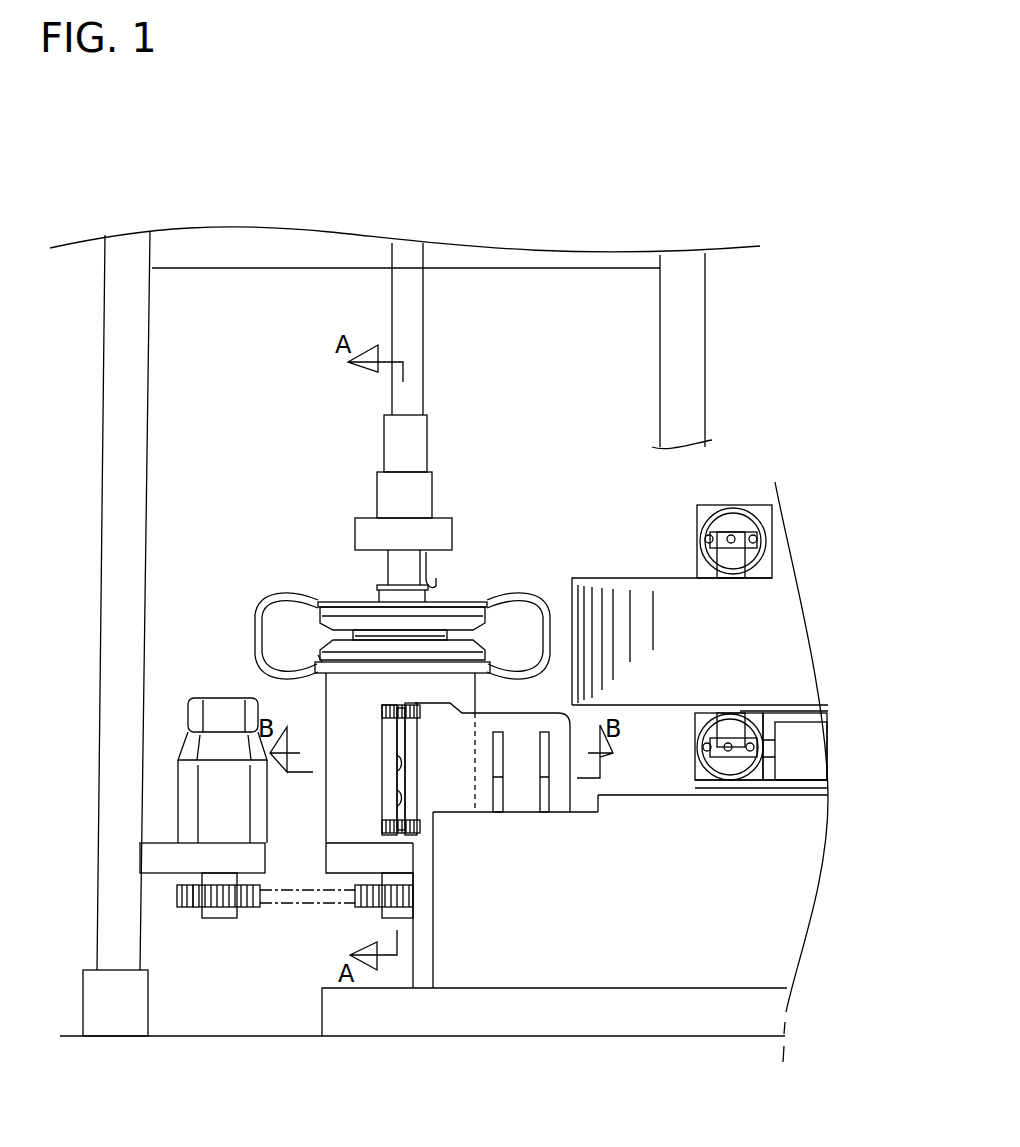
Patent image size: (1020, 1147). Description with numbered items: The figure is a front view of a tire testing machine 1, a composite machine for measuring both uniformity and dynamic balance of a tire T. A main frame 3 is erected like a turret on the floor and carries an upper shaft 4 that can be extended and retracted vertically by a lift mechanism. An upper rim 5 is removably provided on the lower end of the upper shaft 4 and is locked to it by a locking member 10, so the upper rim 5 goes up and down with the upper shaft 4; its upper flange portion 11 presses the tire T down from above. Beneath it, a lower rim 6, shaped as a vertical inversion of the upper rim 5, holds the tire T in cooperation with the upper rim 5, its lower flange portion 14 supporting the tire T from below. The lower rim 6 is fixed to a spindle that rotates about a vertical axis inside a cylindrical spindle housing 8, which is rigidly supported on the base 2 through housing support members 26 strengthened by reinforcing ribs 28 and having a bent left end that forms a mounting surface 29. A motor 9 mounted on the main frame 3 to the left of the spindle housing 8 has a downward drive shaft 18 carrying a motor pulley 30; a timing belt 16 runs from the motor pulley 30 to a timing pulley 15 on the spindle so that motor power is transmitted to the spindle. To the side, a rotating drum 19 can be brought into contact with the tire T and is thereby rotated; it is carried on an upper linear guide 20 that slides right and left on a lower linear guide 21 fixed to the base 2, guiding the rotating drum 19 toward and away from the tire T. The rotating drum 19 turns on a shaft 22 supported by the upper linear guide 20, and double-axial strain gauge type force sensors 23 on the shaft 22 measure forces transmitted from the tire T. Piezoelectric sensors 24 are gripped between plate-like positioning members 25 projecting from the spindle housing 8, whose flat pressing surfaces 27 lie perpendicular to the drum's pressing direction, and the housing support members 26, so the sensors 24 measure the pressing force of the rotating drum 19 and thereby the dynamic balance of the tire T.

The tire testing machine 1 is at (526, 207).
The base 2 is at (683, 965).
The main frame 3 is at (131, 256).
The upper shaft 4 is at (407, 313).
The upper rim 5 is at (458, 606).
The lower rim 6 is at (320, 655).
The spindle housing 8 is at (332, 792).
The motor 9 is at (225, 712).
The locking member 10 is at (430, 582).
The upper flange portion 11 is at (487, 612).
The lower flange portion 14 is at (490, 673).
The timing pulley 15 is at (412, 905).
The timing belt 16 is at (310, 905).
The drive shaft 18 is at (218, 908).
The rotating drum 19 is at (641, 592).
The upper linear guide 20 is at (800, 790).
The lower linear guide 21 is at (800, 812).
The shaft 22 is at (729, 720).
The force sensor 23 is at (744, 510).
The piezoelectric sensor 24 is at (412, 835).
The positioning member 25 is at (387, 735).
The housing support member 26 is at (566, 815).
The pressing surface 27 is at (390, 803).
The reinforcing rib 28 is at (500, 800).
The mounting surface 29 is at (403, 763).
The motor pulley 30 is at (180, 900).
The tire T is at (278, 590).